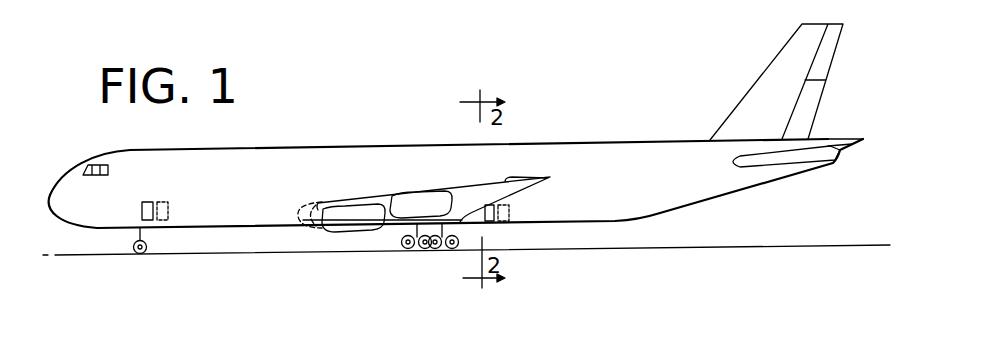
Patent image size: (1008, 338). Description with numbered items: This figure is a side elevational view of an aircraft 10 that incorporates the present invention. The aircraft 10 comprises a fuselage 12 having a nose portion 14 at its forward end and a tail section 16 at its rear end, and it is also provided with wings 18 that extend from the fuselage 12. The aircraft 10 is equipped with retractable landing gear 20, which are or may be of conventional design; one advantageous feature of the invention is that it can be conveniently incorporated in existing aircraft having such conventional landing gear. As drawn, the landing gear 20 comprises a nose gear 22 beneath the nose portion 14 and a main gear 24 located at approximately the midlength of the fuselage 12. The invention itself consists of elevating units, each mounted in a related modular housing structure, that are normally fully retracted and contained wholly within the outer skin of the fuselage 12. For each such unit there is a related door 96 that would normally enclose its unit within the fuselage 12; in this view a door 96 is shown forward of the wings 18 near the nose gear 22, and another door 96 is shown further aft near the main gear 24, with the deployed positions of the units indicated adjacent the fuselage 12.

The aircraft 10 is at (382, 130).
The fuselage 12 is at (310, 160).
The nose portion 14 is at (73, 192).
The tail section 16 is at (762, 90).
The wings 18 is at (448, 186).
The retractable landing gear 20 is at (408, 258).
The nose gear 22 is at (135, 253).
The main gear 24 is at (449, 252).
The door 96 is at (152, 202).